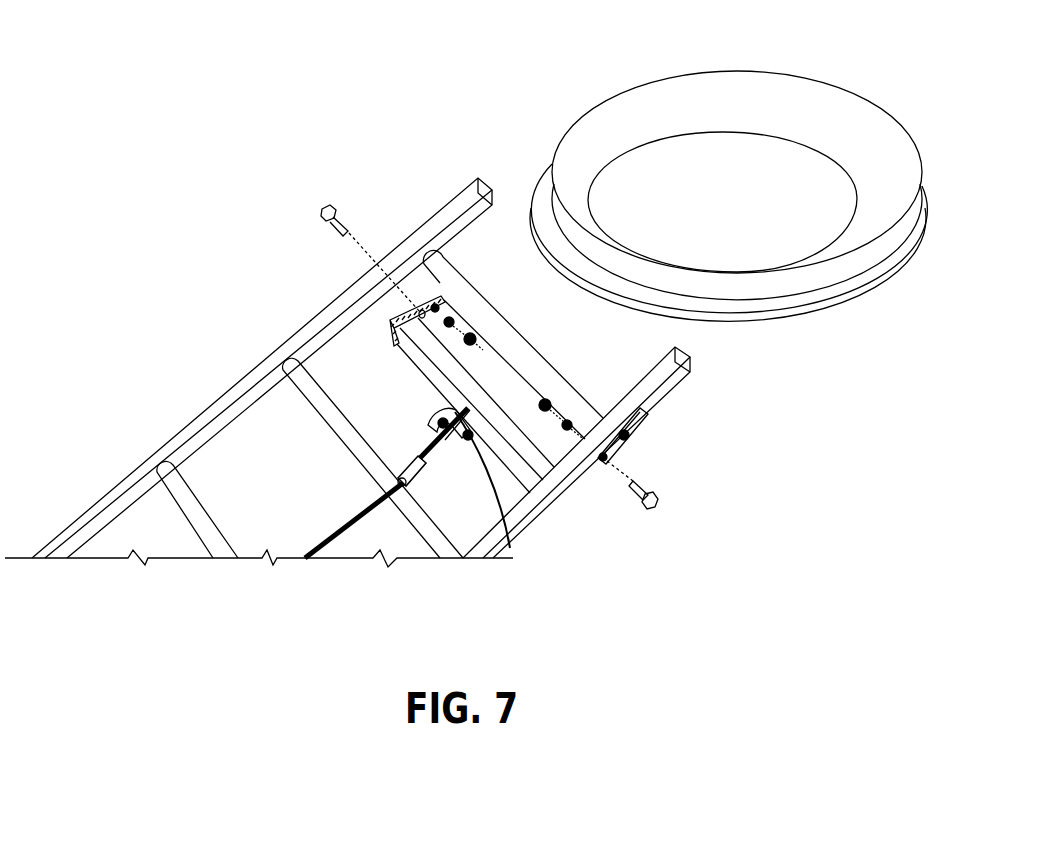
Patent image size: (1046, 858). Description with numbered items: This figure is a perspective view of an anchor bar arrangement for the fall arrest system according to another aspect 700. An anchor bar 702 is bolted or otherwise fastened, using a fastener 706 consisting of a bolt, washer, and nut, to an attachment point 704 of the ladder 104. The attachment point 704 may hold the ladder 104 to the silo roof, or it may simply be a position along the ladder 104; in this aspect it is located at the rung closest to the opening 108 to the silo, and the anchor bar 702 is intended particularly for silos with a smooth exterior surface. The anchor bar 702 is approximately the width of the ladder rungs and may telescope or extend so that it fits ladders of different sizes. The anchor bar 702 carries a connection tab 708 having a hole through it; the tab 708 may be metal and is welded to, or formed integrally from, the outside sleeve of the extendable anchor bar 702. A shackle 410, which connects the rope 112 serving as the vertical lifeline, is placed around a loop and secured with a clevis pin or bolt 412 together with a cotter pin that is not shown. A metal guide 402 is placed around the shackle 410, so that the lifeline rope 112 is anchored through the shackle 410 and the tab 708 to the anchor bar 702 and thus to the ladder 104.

The aspect 700 is at (245, 251).
The ladder 104 is at (162, 455).
The connection tab 708 is at (530, 493).
The shackle 410 is at (518, 532).
The rope 112 is at (343, 537).
The metal guide 402 is at (423, 453).
The clevis pin or bolt 412 is at (438, 422).
The anchor bar 702 is at (493, 393).
The attachment point 704 is at (338, 213).
The fastener 706 is at (653, 477).
The opening 108 is at (722, 70).